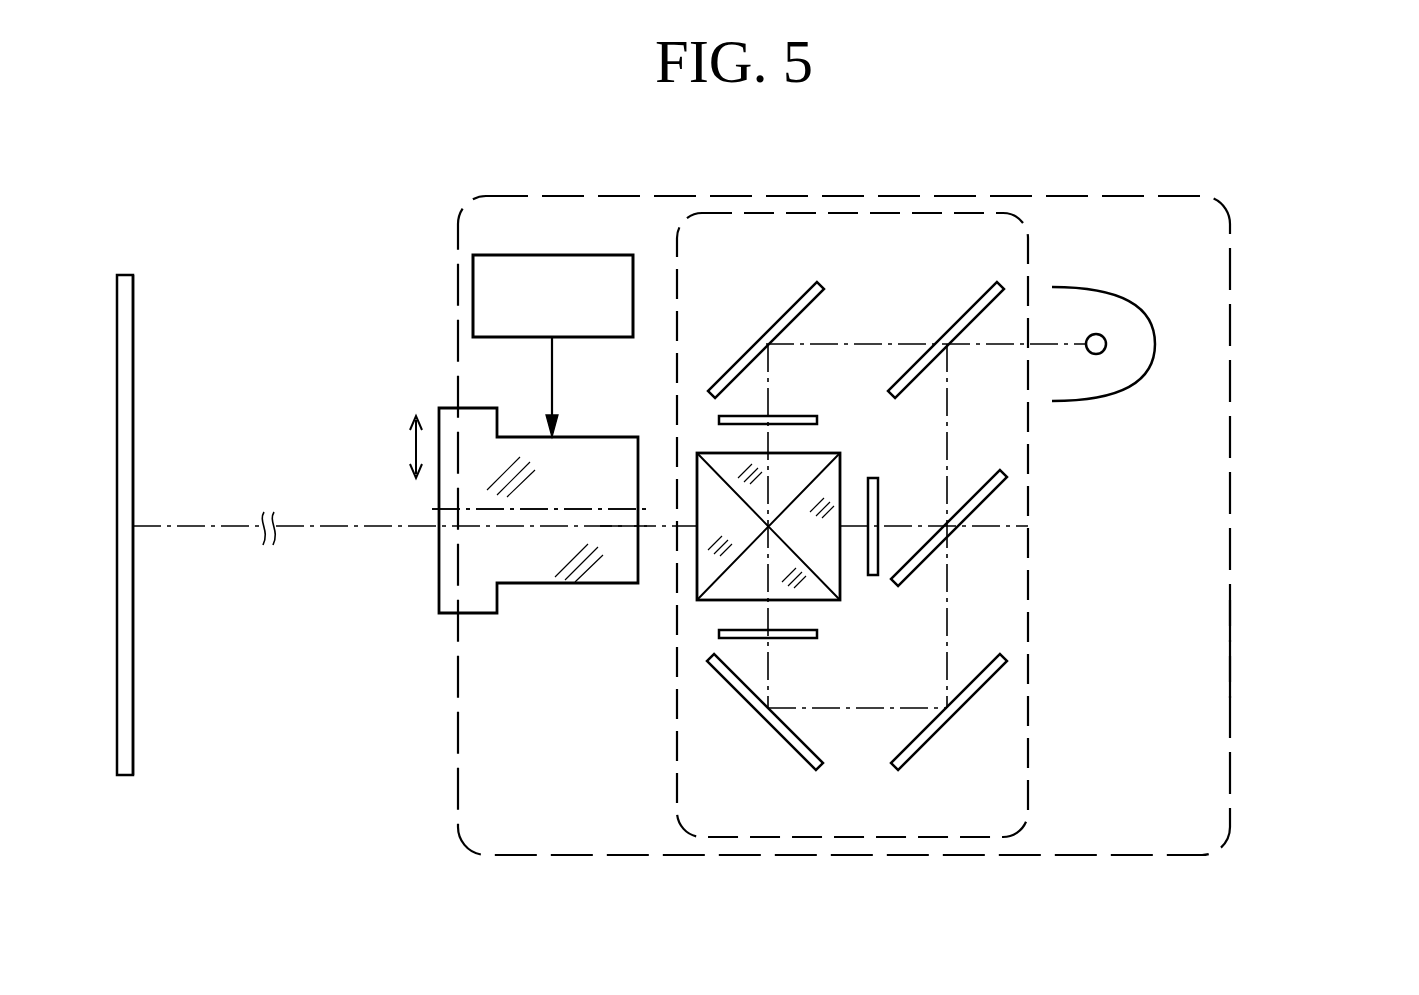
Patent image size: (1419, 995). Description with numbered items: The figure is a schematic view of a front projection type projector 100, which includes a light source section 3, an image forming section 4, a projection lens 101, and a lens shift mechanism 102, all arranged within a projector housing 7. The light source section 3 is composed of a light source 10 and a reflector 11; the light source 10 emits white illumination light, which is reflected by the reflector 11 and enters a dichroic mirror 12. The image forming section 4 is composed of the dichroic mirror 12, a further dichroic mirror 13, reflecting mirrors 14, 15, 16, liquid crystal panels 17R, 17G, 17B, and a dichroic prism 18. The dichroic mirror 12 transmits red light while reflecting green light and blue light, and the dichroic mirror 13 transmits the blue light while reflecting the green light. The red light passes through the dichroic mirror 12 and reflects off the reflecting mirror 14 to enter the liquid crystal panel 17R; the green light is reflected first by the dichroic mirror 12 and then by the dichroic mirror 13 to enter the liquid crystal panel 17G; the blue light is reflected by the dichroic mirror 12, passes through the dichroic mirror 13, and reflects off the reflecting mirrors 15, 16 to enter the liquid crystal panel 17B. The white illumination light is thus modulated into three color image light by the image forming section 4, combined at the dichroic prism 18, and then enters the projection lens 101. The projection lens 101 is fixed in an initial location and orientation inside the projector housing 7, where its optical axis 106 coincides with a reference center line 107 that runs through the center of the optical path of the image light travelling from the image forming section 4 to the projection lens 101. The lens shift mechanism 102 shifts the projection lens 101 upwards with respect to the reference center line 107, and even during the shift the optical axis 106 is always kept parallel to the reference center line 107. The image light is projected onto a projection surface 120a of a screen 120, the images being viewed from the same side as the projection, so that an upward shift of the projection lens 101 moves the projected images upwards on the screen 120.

The projector 100 is at (1288, 290).
The projector housing 7 is at (1230, 543).
The image forming section 4 is at (1026, 745).
The light source section 3 is at (1117, 403).
The light source 10 is at (1090, 397).
The reflector 11 is at (1100, 353).
The dichroic mirror 12 is at (975, 298).
The dichroic mirror 13 is at (970, 520).
The reflecting mirror 14 is at (790, 305).
The reflecting mirror 15 is at (915, 758).
The reflecting mirror 16 is at (787, 743).
The liquid crystal panel 17B is at (787, 416).
The liquid crystal panel 17G is at (872, 478).
The liquid crystal panel 17R is at (800, 638).
The dichroic prism 18 is at (840, 583).
The projection lens 101 is at (530, 583).
The lens shift mechanism 102 is at (572, 255).
The optical axis 106 is at (583, 509).
The reference center line 107 is at (650, 526).
The screen 120 is at (134, 762).
The projection surface 120a is at (134, 697).